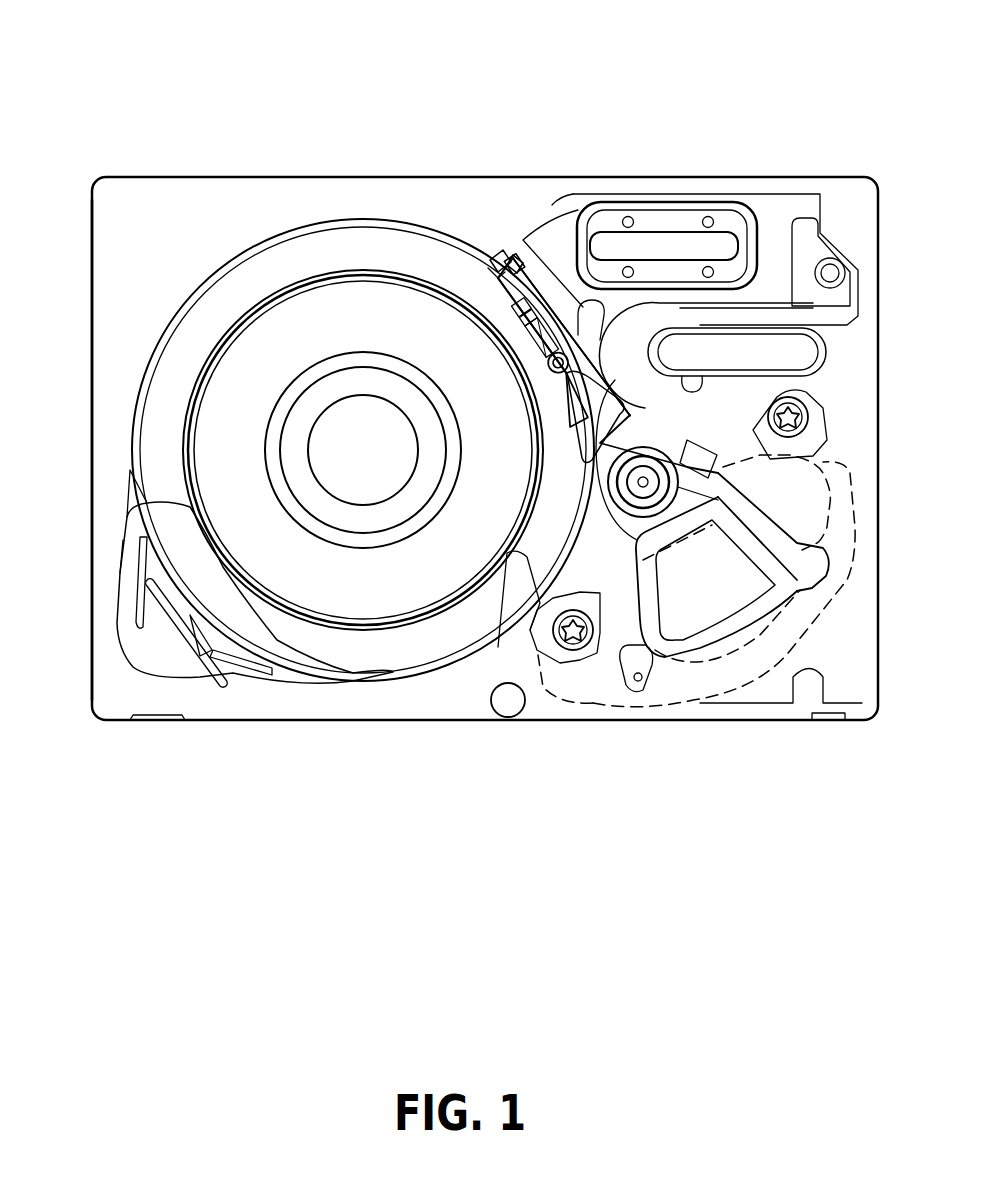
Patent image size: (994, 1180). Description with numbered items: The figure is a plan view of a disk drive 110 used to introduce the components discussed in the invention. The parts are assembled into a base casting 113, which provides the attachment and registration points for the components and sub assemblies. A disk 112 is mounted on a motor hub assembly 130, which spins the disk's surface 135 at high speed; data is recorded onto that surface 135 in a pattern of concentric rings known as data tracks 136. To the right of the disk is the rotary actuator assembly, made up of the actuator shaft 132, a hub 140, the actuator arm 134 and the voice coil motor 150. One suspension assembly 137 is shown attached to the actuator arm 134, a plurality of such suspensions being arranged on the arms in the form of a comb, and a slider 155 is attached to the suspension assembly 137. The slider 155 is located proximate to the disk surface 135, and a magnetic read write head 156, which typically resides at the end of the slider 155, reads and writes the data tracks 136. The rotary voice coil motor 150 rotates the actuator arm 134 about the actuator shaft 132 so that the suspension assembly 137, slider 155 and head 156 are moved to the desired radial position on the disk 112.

The disk drive 110 is at (190, 120).
The disk 112 is at (210, 265).
The base casting 113 is at (115, 403).
The motor hub assembly 130 is at (365, 443).
The actuator shaft 132 is at (643, 490).
The actuator arm 134 is at (590, 367).
The disk surface 135 is at (287, 268).
The data tracks 136 is at (190, 505).
The suspension assembly 137 is at (520, 262).
The hub 140 is at (608, 500).
The voice coil motor 150 is at (717, 663).
The slider 155 is at (495, 262).
The magnetic read write head 156 is at (500, 275).